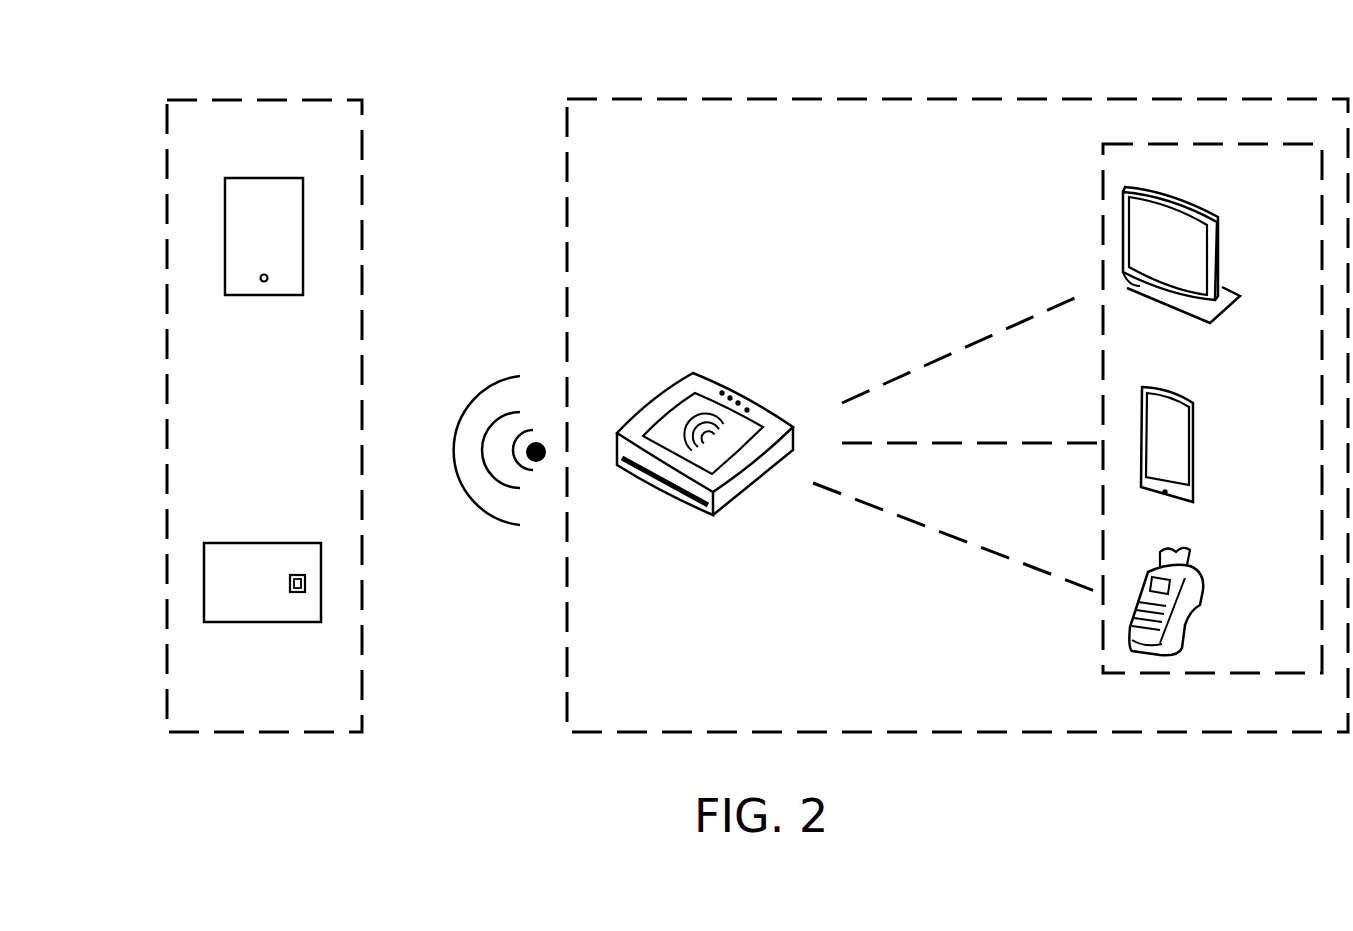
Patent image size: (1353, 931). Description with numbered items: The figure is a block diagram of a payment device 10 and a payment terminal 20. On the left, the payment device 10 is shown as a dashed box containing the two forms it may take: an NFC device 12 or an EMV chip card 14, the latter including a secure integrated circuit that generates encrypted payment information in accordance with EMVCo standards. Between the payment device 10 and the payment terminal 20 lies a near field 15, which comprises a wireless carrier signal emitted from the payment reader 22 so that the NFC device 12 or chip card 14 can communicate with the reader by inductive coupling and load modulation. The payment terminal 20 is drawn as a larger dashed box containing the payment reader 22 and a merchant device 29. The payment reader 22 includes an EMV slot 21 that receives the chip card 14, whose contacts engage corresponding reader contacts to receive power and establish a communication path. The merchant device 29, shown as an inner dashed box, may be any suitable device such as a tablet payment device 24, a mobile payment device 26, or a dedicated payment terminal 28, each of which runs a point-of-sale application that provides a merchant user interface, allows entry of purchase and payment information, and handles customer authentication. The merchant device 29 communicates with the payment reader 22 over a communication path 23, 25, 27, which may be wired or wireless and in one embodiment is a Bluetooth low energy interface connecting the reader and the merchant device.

The payment device 10 is at (248, 100).
The NFC device 12 is at (285, 178).
The EMV chip card 14 is at (293, 543).
The near field 15 is at (496, 348).
The payment terminal 20 is at (965, 732).
The EMV slot 21 is at (653, 492).
The payment reader 22 is at (749, 393).
The communication path 23 is at (1010, 327).
The tablet payment device 24 is at (1208, 208).
The communication path 25 is at (1029, 443).
The mobile payment device 26 is at (1196, 418).
The communication path 27 is at (1022, 563).
The payment terminal 28 is at (1203, 587).
The merchant device 29 is at (1185, 673).